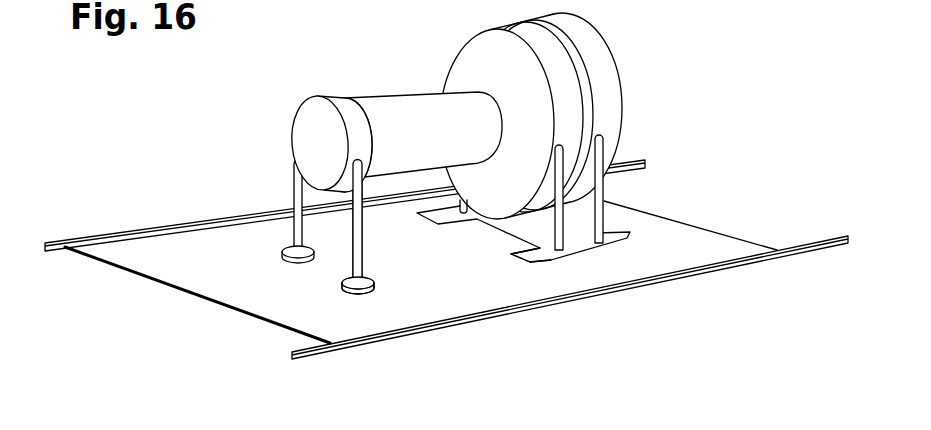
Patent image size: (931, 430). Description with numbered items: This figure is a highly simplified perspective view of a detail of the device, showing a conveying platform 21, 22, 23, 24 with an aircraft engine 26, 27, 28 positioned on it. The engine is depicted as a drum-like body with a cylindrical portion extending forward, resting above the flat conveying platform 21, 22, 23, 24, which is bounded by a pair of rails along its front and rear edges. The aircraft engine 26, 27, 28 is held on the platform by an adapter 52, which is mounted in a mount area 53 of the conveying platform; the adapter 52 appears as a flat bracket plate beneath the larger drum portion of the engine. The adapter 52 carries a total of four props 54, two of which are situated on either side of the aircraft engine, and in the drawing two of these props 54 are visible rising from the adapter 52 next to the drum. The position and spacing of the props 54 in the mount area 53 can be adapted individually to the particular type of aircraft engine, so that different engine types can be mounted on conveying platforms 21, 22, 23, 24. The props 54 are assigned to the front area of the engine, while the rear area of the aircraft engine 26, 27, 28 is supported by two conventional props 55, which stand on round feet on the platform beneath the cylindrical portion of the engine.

The conveying platform 21 is at (446, 271).
The conveying platform 22 is at (446, 271).
The conveying platform 23 is at (446, 271).
The conveying platform 24 is at (430, 295).
The aircraft engine 26 is at (390, 110).
The aircraft engine 27 is at (390, 110).
The aircraft engine 28 is at (400, 120).
The adapter 52 is at (628, 237).
The mount area 53 is at (543, 257).
The props 54 is at (563, 179).
The conventional props 55 is at (293, 230).